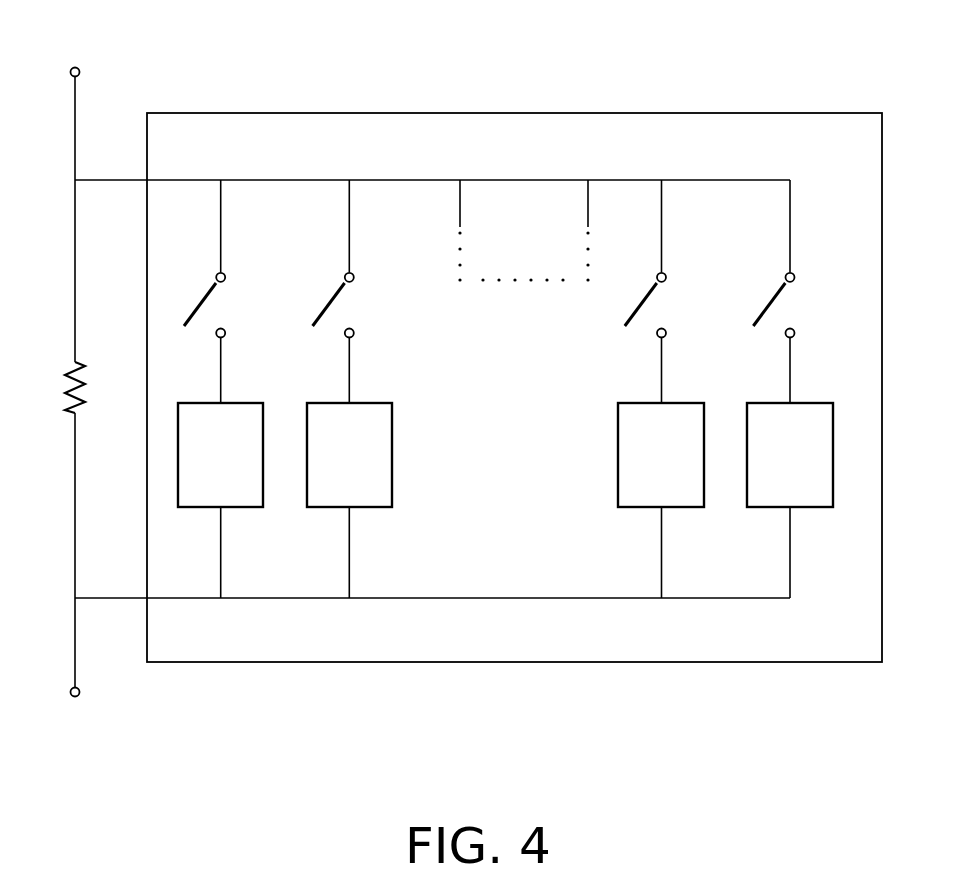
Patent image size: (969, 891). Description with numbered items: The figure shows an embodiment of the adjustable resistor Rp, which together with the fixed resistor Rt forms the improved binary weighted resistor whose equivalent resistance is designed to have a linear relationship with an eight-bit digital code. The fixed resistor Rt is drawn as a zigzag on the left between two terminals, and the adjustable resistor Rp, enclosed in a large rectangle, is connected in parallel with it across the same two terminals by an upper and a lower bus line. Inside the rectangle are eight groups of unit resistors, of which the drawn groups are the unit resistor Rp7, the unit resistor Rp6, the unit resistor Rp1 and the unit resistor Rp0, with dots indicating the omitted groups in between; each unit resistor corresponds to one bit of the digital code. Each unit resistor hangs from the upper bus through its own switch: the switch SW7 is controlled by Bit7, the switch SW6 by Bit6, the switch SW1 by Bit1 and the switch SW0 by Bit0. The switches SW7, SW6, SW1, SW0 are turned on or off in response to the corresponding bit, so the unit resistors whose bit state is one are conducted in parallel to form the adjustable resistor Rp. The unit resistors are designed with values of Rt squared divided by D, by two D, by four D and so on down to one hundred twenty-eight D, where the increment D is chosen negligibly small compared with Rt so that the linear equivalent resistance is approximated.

The adjustable resistor Rp is at (803, 113).
The fixed resistor Rt is at (54, 387).
The unit resistor Rp7 is at (220, 468).
The unit resistor Rp6 is at (349, 468).
The unit resistor Rp1 is at (661, 468).
The unit resistor Rp0 is at (790, 468).
The switch SW7 is at (203, 304).
The switch SW6 is at (332, 304).
The switch SW1 is at (641, 304).
The switch SW0 is at (771, 304).
The bit of the digital code Bit7 is at (250, 226).
The bit of the digital code Bit6 is at (378, 226).
The bit of the digital code Bit1 is at (691, 226).
The bit of the digital code Bit0 is at (820, 226).